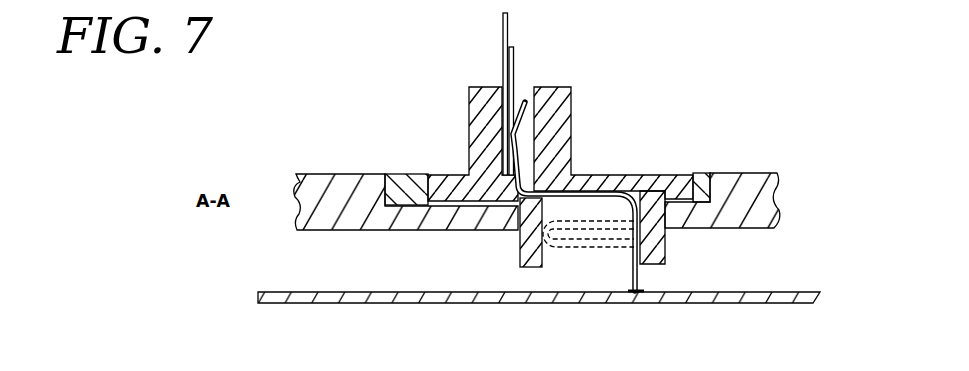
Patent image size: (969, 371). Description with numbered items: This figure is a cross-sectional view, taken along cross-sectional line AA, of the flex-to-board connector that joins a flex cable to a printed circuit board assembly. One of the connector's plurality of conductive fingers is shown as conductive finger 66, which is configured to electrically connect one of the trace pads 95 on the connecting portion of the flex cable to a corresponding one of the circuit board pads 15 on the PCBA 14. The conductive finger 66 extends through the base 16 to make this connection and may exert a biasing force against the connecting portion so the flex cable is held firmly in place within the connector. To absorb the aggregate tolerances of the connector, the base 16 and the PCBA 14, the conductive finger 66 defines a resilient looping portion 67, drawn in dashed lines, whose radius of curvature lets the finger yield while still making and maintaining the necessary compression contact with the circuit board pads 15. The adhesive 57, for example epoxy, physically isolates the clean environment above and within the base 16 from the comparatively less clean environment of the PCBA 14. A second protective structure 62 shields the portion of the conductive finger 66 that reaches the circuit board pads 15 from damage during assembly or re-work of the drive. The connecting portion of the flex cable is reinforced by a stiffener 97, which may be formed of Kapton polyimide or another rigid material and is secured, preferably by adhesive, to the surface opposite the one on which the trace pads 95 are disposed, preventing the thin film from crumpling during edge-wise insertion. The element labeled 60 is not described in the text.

The PCBA 14 is at (735, 301).
The circuit board pads 15 is at (641, 291).
The base 16 is at (340, 173).
The adhesive 57 is at (407, 180).
The clip block 60 is at (468, 160).
The second protective structure 62 is at (516, 244).
The conductive finger 66 is at (528, 112).
The resilient looping portion 67 is at (568, 232).
The trace pad 95 is at (509, 118).
The stiffener 97 is at (506, 66).